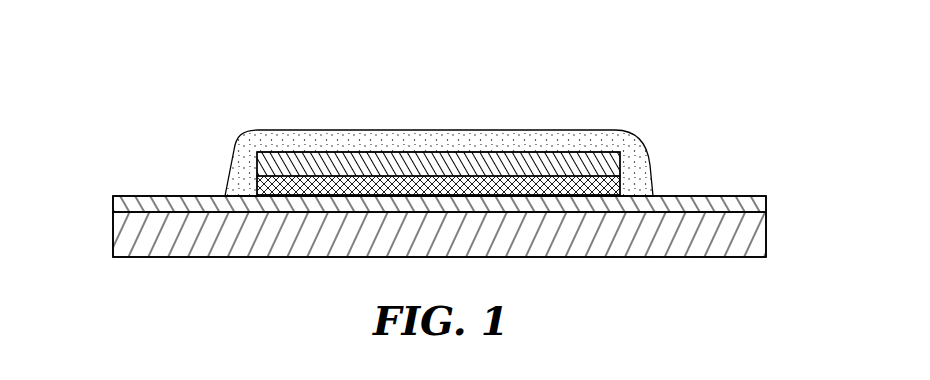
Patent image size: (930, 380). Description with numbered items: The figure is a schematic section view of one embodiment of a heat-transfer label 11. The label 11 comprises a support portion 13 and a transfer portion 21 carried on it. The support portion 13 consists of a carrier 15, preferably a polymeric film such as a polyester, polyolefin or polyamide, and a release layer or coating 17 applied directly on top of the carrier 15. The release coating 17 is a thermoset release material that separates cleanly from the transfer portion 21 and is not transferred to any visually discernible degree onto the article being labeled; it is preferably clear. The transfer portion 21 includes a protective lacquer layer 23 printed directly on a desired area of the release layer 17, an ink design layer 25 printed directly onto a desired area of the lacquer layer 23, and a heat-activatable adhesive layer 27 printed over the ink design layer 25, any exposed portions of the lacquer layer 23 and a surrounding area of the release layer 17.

The heat-transfer label 11 is at (497, 78).
The support portion 13 is at (105, 197).
The carrier 15 is at (712, 248).
The release layer or coating 17 is at (737, 195).
The transfer portion 21 is at (202, 128).
The protective lacquer layer 23 is at (622, 183).
The ink design layer 25 is at (605, 167).
The heat-activatable adhesive layer 27 is at (577, 140).